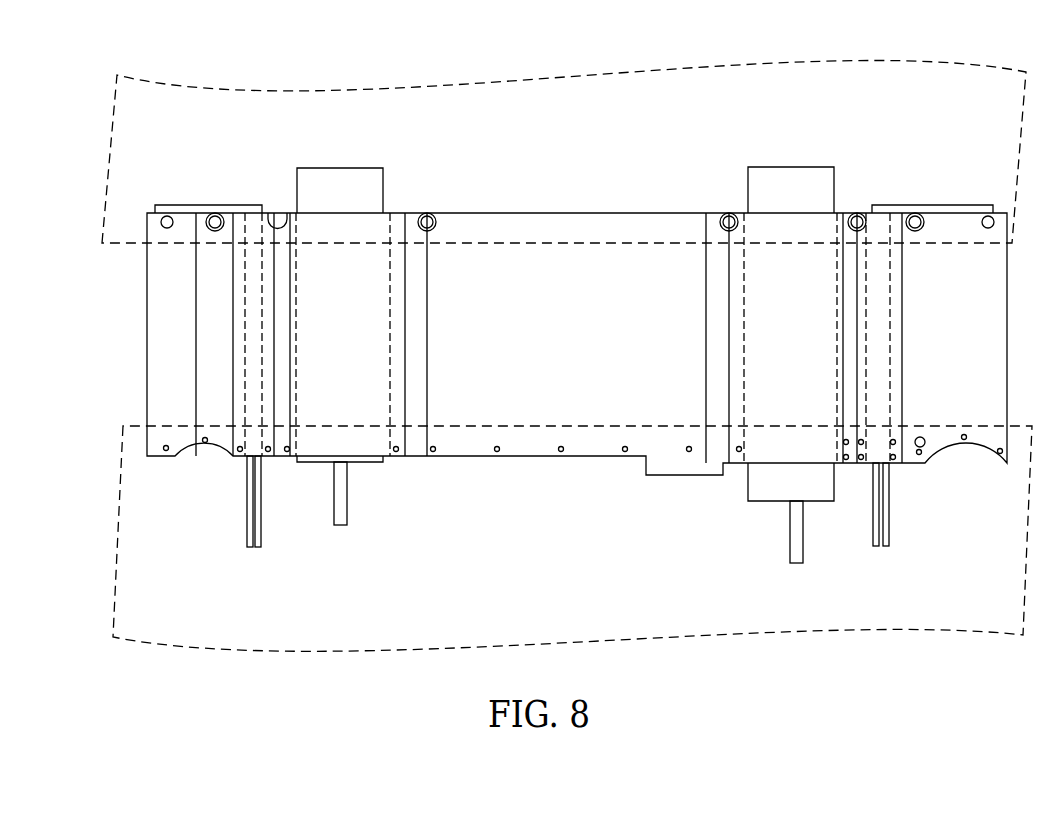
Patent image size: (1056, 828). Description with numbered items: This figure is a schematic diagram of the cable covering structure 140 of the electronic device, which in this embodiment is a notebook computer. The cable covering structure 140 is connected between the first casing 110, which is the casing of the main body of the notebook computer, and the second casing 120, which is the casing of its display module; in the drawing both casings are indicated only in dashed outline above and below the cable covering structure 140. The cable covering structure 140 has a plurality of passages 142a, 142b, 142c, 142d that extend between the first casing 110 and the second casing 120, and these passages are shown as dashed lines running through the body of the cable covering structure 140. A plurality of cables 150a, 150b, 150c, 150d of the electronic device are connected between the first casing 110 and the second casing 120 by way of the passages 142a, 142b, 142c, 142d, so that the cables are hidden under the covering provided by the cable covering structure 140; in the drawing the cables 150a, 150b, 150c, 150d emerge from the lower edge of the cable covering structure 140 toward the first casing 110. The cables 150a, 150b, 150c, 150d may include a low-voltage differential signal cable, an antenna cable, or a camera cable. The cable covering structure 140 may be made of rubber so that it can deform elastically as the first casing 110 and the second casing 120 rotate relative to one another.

The first casing 110 is at (135, 543).
The second casing 120 is at (130, 125).
The cable covering structure 140 is at (997, 330).
The passage 142a is at (261, 263).
The passage 142b is at (390, 267).
The passage 142c is at (837, 283).
The passage 142d is at (888, 282).
The cable 150a is at (247, 508).
The cable 150b is at (383, 458).
The cable 150c is at (748, 490).
The cable 150d is at (889, 517).